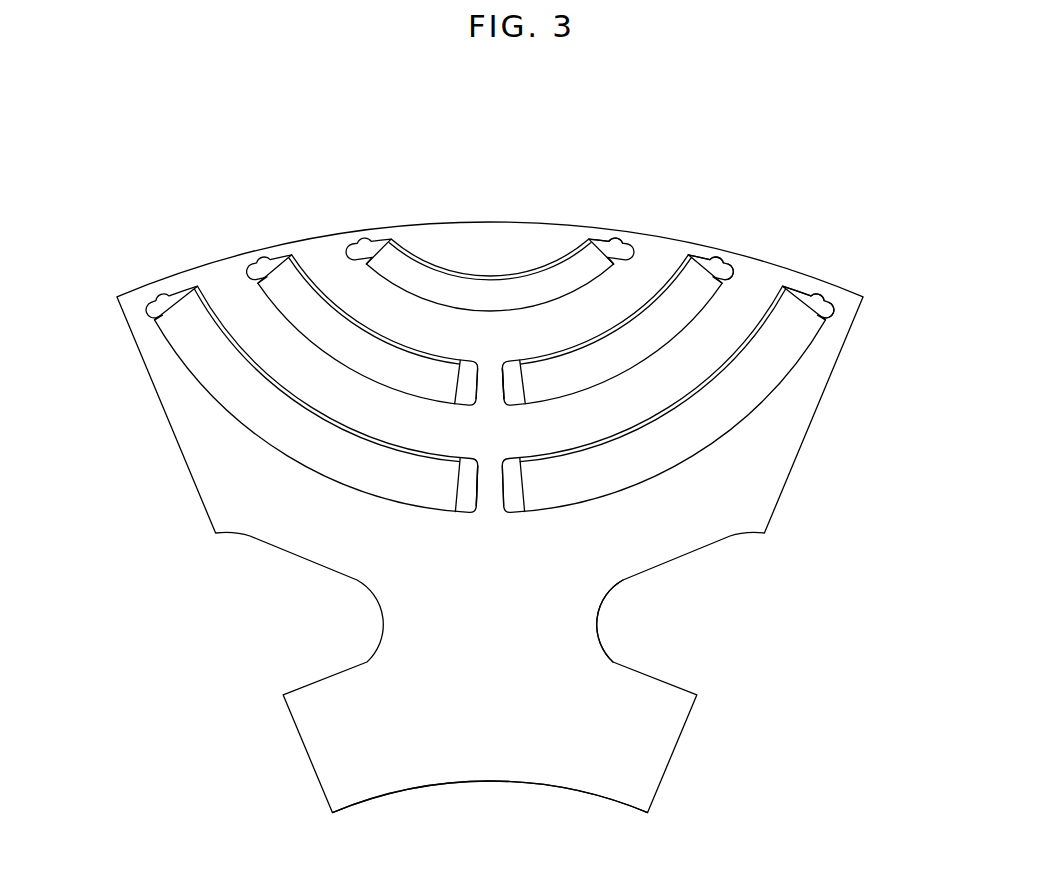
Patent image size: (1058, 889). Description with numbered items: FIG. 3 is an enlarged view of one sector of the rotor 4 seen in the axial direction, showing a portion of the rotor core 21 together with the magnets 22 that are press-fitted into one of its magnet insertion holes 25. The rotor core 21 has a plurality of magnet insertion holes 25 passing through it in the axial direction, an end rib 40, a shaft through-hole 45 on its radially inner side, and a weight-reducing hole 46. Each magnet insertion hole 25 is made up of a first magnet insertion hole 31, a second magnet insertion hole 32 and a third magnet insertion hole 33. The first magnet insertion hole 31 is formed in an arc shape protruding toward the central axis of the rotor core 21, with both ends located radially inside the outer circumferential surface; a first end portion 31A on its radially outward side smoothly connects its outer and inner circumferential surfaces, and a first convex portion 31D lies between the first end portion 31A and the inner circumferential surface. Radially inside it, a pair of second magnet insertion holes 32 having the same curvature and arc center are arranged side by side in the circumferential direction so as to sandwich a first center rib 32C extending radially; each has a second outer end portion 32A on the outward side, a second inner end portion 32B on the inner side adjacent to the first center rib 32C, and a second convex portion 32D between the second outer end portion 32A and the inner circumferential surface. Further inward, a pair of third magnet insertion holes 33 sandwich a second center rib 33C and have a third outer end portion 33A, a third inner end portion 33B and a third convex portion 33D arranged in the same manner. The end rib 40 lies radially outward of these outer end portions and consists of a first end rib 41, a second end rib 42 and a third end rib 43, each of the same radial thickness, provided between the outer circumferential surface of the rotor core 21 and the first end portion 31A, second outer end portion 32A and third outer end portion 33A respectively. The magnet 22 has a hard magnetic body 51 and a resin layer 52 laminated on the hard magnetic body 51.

The rotor 4 is at (457, 487).
The rotor core 21 is at (457, 500).
The magnet 22 is at (551, 323).
The magnet insertion hole 25 is at (542, 365).
The first magnet insertion hole 31 is at (474, 197).
The first end portion 31A is at (610, 230).
The first convex portion 31D is at (603, 232).
The second magnet insertion hole 32 is at (528, 244).
The second outer end portion 32A is at (724, 258).
The second inner end portion 32B is at (493, 372).
The first center rib 32C is at (488, 385).
The second convex portion 32D is at (728, 252).
The third magnet insertion hole 33 is at (542, 390).
The third outer end portion 33A is at (818, 284).
The third inner end portion 33B is at (505, 494).
The second center rib 33C is at (490, 477).
The third convex portion 33D is at (832, 302).
The end rib 40 is at (754, 192).
The first end rib 41 is at (620, 233).
The second end rib 42 is at (716, 246).
The third end rib 43 is at (803, 285).
The shaft through-hole 45 is at (609, 796).
The weight-reducing hole 46 is at (600, 618).
The hard magnetic body 51 is at (772, 346).
The resin layer 52 is at (728, 366).